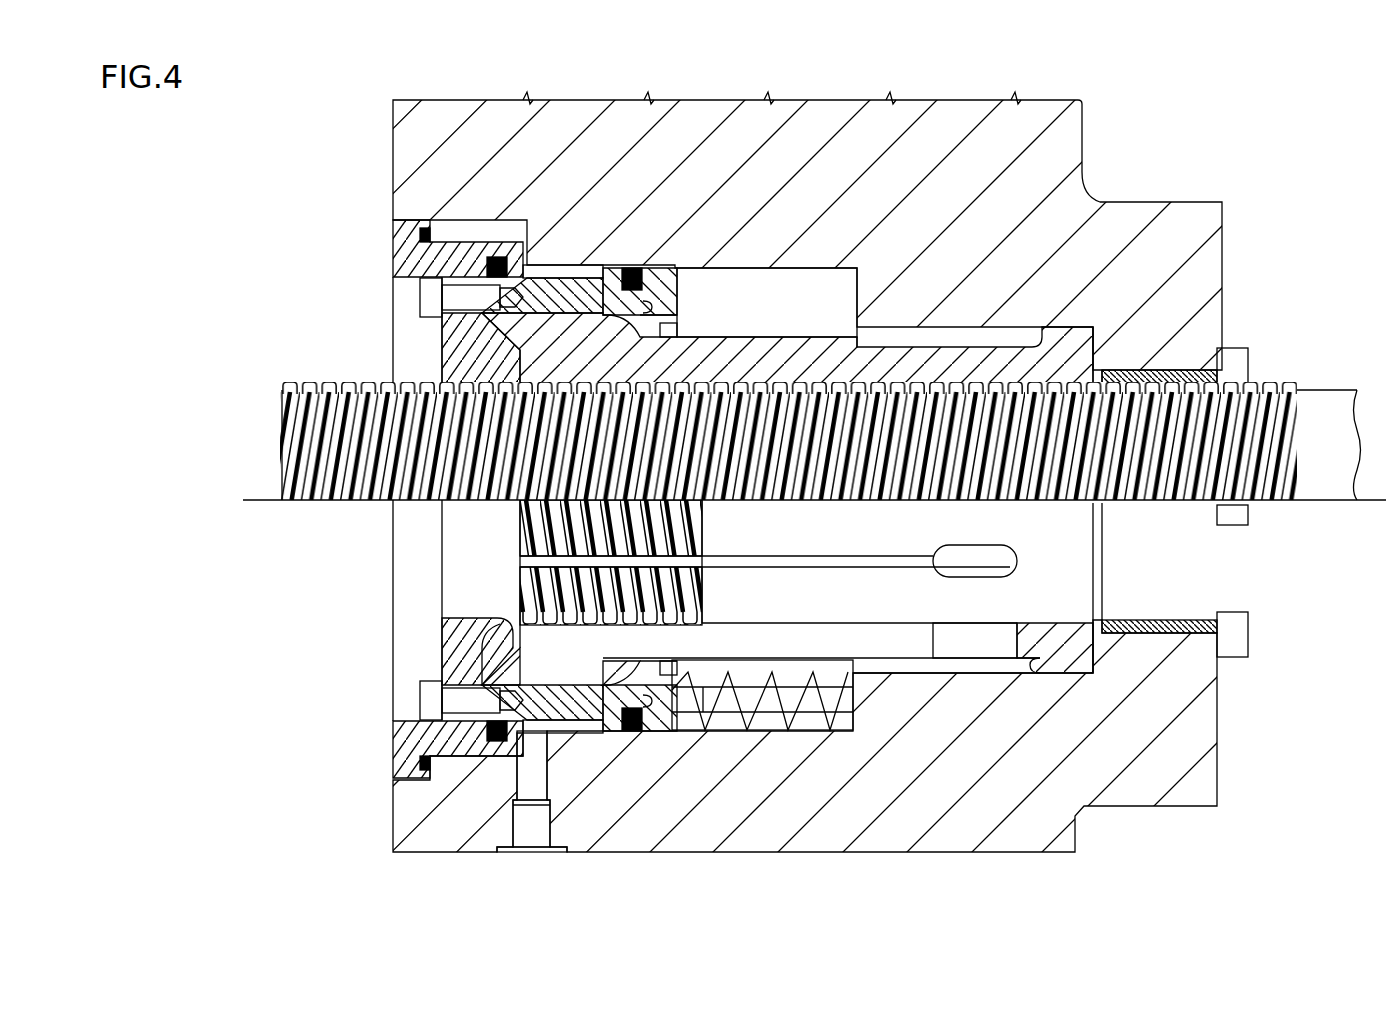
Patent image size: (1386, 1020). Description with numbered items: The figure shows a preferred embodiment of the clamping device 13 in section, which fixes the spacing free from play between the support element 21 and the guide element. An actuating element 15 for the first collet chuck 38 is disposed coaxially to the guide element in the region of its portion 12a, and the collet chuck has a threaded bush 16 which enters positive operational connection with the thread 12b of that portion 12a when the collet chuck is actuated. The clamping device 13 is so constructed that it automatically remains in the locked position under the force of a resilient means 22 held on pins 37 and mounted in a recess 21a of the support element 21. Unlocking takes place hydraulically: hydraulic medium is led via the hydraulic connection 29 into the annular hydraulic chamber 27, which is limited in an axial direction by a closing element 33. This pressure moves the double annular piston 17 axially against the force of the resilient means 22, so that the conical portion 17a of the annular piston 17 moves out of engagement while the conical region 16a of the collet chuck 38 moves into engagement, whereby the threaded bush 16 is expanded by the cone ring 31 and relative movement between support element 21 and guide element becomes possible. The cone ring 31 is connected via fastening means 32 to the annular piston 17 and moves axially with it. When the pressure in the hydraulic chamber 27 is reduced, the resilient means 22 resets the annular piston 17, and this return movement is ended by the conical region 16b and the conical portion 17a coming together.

The portion 12a is at (322, 455).
The thread 12b is at (717, 366).
The clamping device 13 is at (276, 266).
The actuating element 15 is at (436, 353).
The threaded bush 16 is at (700, 522).
The conical region 16a is at (470, 616).
The conical region 16b is at (640, 266).
The annular piston 17 is at (620, 303).
The conical portion 17a is at (650, 327).
The support element 21 is at (1068, 148).
The recess 21a is at (763, 270).
The resilient means 22 is at (760, 712).
The annular hydraulic chamber 27 is at (568, 272).
The hydraulic connection 29 is at (535, 828).
The cone ring 31 is at (465, 328).
The fastening means 32 is at (430, 300).
The closing element 33 is at (410, 246).
The pins 37 is at (743, 698).
The first collet chuck 38 is at (846, 541).